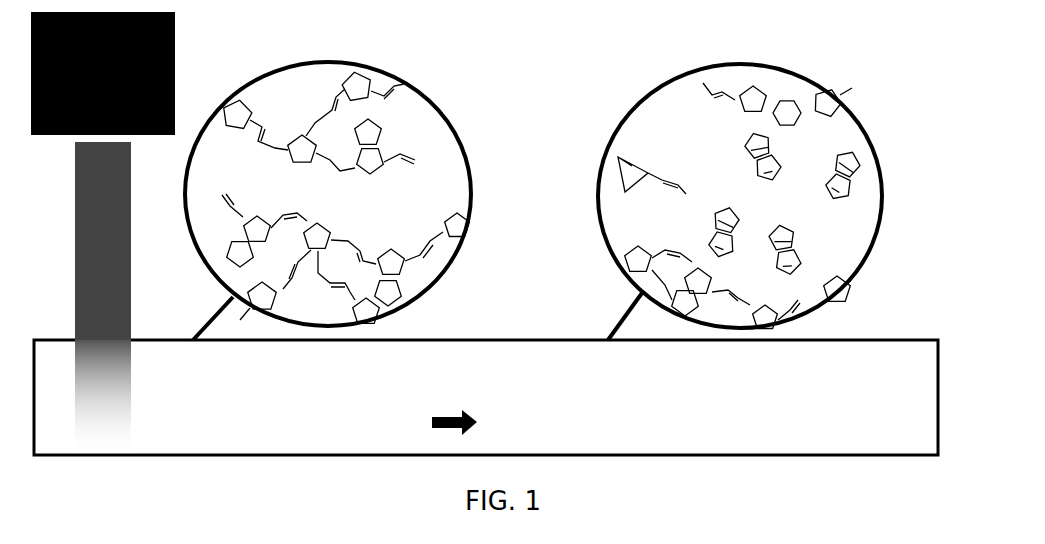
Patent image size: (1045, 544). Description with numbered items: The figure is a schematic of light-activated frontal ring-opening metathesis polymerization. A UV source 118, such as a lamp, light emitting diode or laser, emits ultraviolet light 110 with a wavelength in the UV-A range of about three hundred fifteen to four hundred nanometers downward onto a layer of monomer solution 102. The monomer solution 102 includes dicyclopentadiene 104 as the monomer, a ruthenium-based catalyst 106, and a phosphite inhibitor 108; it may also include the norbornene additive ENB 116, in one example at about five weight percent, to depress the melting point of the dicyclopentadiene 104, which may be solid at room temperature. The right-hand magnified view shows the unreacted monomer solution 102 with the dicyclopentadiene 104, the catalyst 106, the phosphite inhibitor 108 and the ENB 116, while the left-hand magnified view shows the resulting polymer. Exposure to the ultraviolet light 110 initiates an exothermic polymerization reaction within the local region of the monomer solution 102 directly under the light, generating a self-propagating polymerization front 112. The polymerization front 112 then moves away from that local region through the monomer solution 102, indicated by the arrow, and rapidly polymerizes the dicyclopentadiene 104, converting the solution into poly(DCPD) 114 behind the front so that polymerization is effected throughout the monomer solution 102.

The monomer solution 102 is at (598, 203).
The dicyclopentadiene (DCPD) 104 is at (858, 163).
The ruthenium-based catalyst 106 is at (848, 233).
The phosphite inhibitor 108 is at (655, 110).
The ultraviolet light 110 is at (85, 184).
The polymerization front 112 is at (487, 362).
The poly(DCPD) 114 is at (307, 117).
The 5-ethylidene-2-norbornene (ENB) 116 is at (616, 152).
The UV source 118 is at (84, 42).